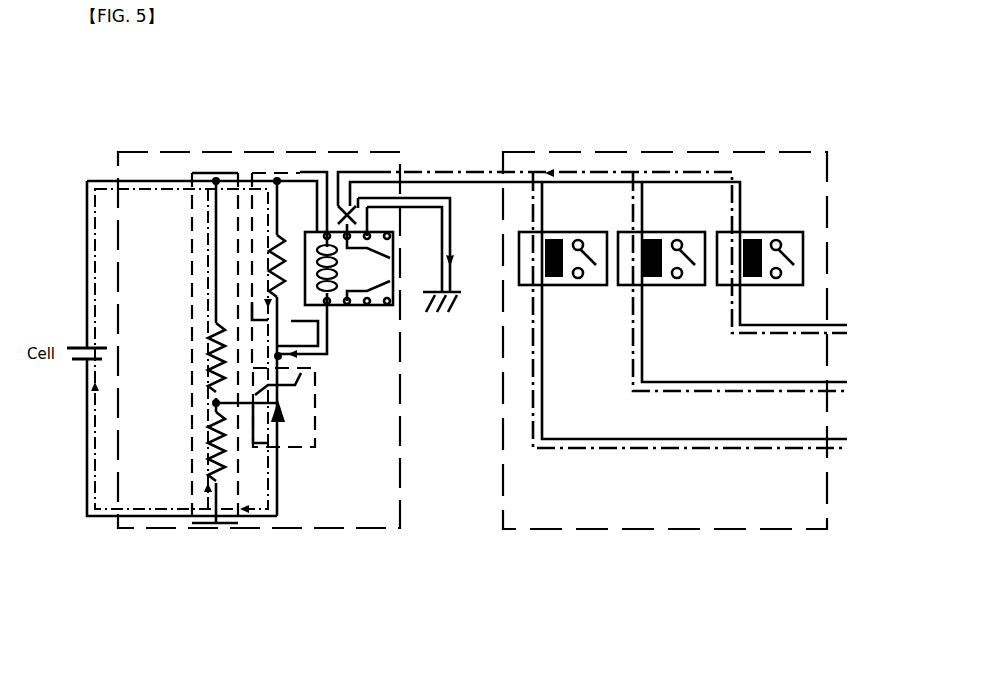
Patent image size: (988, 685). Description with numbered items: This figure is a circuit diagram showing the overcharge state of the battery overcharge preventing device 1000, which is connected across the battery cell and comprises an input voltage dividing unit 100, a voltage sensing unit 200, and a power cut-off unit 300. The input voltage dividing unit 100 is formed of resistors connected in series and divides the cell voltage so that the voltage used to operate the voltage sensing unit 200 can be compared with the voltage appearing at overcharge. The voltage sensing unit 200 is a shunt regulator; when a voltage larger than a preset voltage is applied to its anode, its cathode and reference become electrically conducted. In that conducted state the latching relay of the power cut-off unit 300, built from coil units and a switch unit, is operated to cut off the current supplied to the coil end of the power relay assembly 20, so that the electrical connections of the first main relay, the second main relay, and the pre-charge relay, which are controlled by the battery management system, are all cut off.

The input voltage dividing unit 100 is at (204, 173).
The voltage sensing unit 200 is at (293, 447).
The power cut-off unit 300 is at (327, 170).
The battery overcharge preventing device 1000 is at (363, 528).
The power relay assembly 20 is at (665, 530).